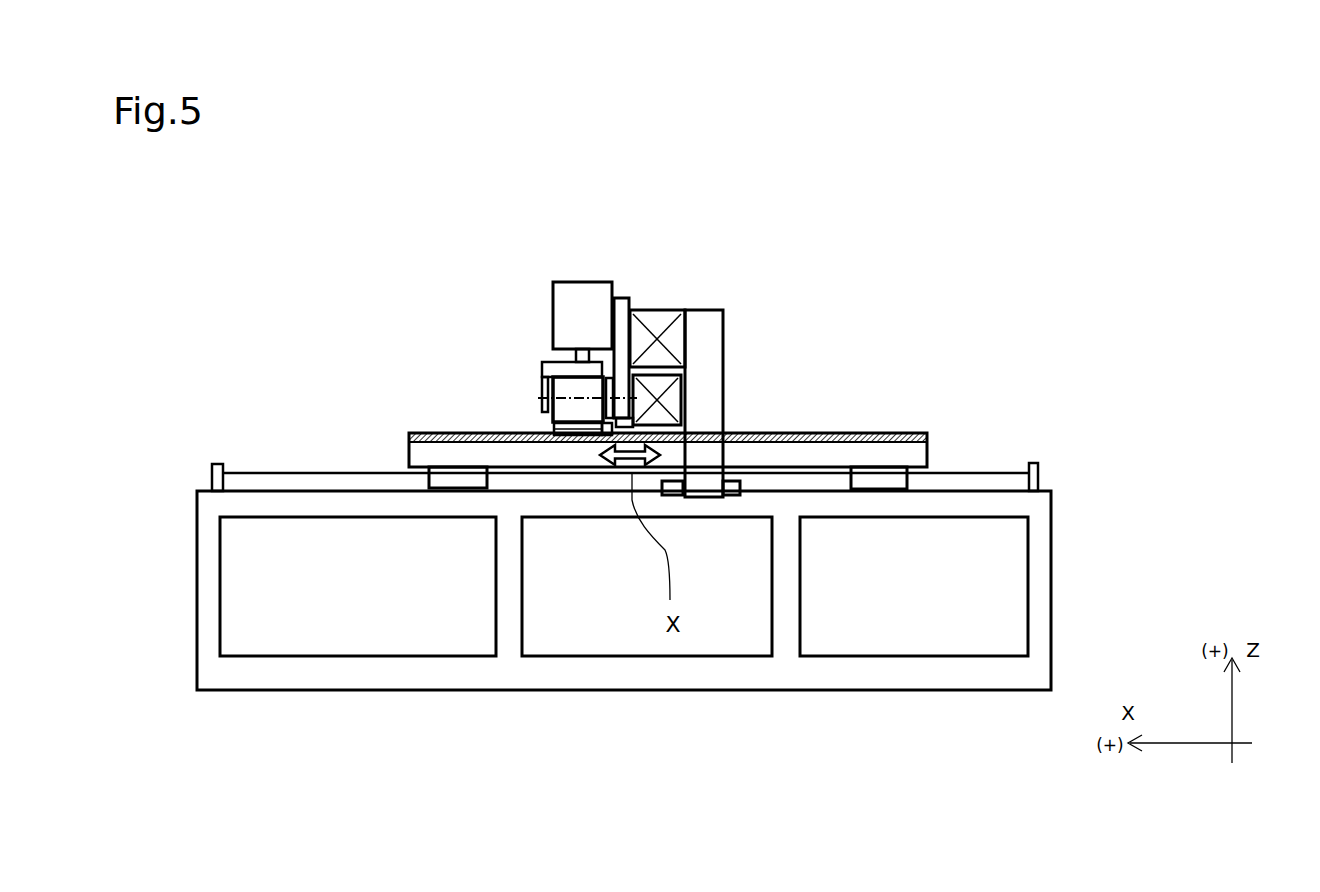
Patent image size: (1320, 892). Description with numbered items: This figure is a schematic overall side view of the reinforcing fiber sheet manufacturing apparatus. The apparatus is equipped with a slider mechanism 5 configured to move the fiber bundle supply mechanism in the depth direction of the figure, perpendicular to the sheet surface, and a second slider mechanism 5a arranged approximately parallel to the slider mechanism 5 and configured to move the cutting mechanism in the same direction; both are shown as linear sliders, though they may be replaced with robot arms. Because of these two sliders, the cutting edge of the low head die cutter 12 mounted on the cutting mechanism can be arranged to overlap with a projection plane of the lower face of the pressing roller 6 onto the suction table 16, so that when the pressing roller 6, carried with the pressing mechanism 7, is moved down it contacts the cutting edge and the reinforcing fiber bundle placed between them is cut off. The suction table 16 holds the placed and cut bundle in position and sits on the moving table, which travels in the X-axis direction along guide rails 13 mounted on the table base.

The slider mechanism 5 is at (658, 312).
The slider mechanism 5a is at (678, 397).
The pressing roller 6 is at (568, 388).
The pressing mechanism 7 is at (593, 287).
The low head die cutter 12 is at (570, 437).
The guide rails 13 is at (1007, 482).
The suction table 16 is at (898, 433).